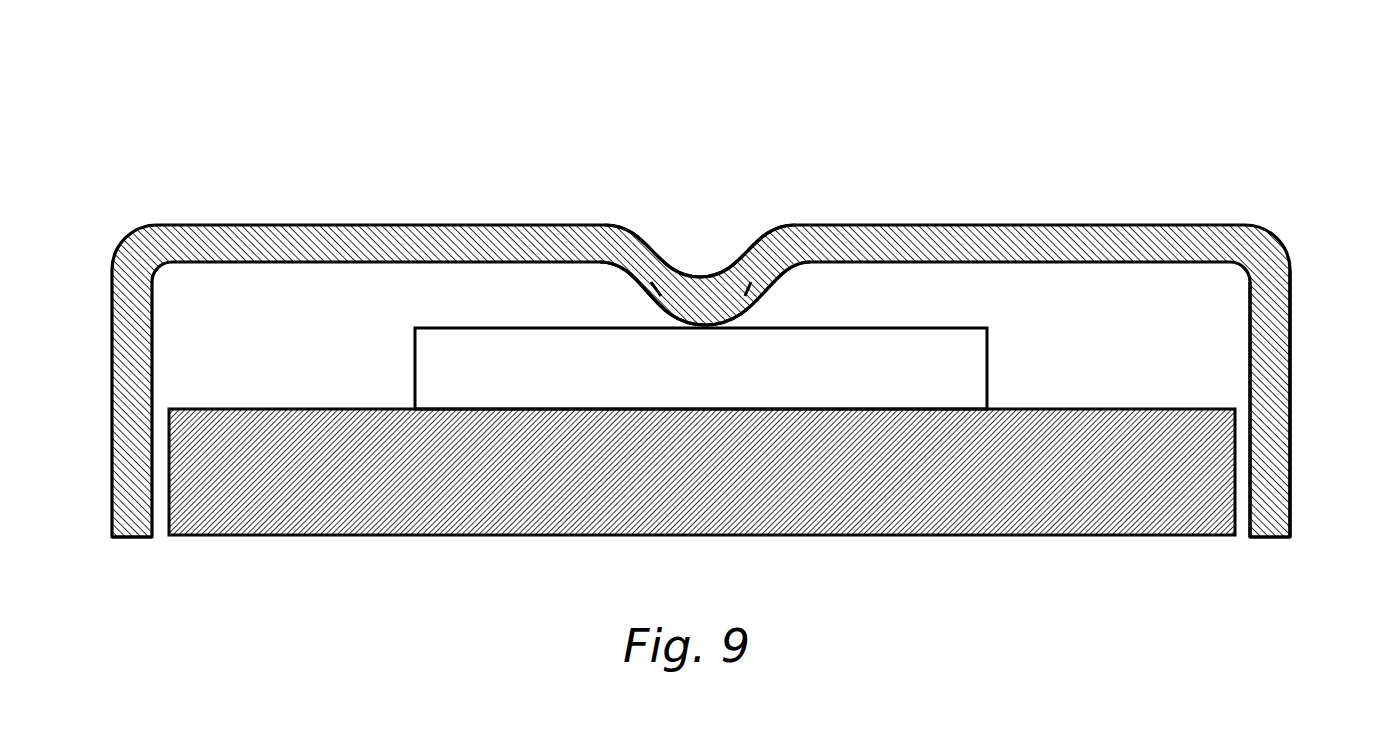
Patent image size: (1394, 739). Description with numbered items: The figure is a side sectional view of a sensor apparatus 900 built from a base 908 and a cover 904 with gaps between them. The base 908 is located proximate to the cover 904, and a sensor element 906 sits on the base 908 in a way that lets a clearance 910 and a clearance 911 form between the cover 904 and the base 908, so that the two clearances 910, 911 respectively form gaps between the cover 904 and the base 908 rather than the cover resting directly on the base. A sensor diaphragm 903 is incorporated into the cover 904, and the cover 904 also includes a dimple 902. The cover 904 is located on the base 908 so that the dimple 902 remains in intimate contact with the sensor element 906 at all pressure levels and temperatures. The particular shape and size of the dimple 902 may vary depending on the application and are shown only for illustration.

The sensor apparatus 900 is at (210, 127).
The dimple 902 is at (658, 322).
The sensor diaphragm 903 is at (403, 226).
The cover 904 is at (1290, 278).
The sensor element 906 is at (720, 385).
The base 908 is at (720, 479).
The clearance 910 is at (159, 546).
The clearance 911 is at (1239, 546).